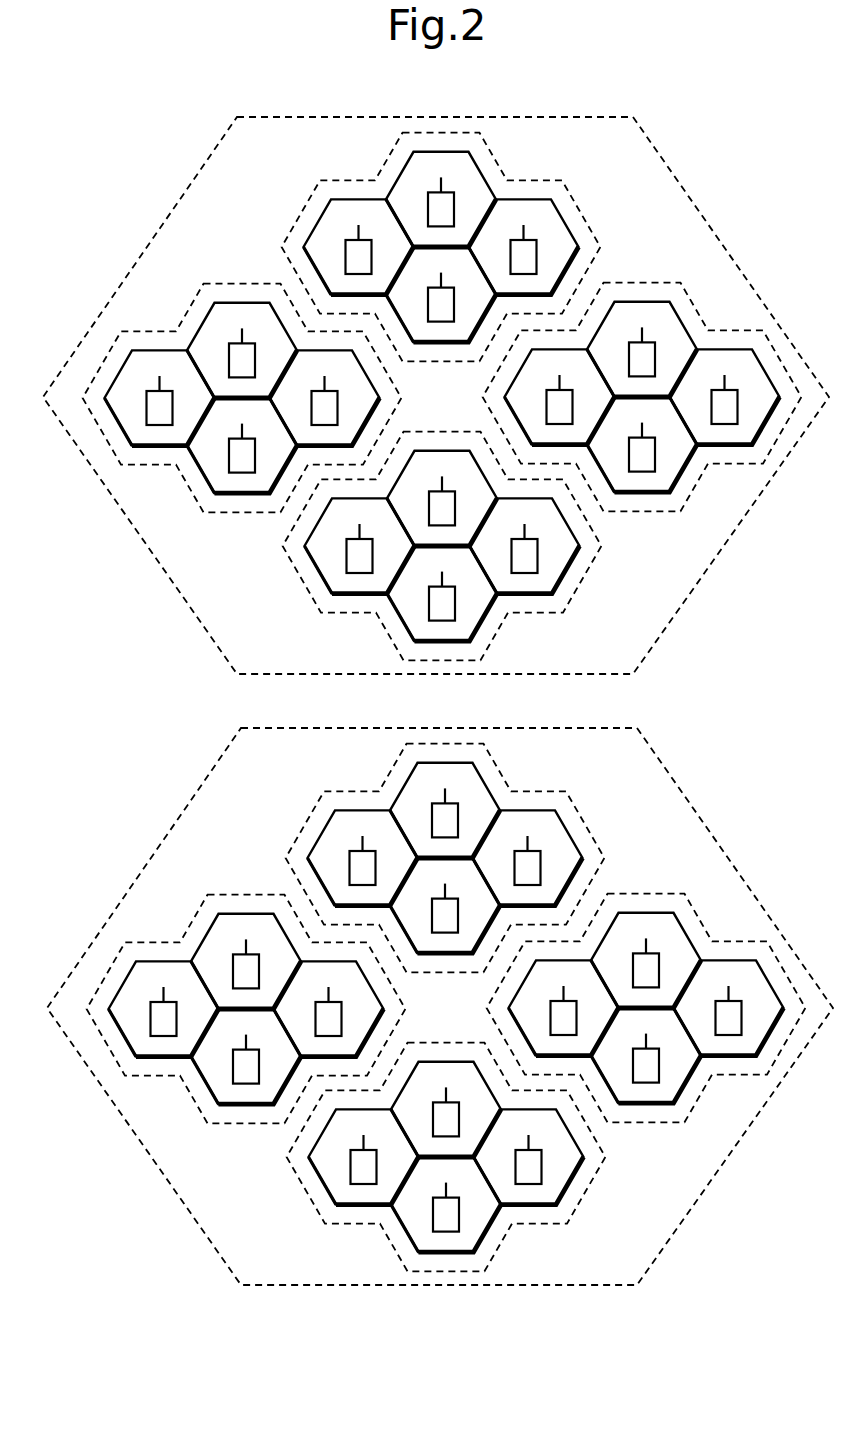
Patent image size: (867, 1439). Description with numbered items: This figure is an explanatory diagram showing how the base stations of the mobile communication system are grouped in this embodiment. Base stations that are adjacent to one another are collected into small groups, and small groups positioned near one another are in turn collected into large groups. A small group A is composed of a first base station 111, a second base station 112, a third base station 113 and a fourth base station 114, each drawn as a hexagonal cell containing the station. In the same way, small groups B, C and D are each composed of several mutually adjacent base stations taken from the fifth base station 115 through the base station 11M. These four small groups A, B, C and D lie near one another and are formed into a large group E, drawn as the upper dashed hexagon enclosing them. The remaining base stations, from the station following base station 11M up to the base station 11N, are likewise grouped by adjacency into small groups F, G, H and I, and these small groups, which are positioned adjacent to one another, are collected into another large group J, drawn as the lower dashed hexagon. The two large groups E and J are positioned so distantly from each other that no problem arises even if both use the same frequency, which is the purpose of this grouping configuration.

The first base station 111 is at (481, 173).
The base station 112 is at (346, 200).
The base station 113 is at (440, 343).
The fourth base station 114 is at (553, 203).
The base station 115 is at (683, 318).
The base station 11M is at (567, 575).
The base station 11N is at (492, 1222).
The small group A is at (598, 234).
The small group B is at (642, 512).
The small group C is at (255, 283).
The small group D is at (302, 589).
The large group E is at (695, 586).
The small group F is at (600, 843).
The small group G is at (648, 1123).
The small group H is at (257, 895).
The small group I is at (306, 1198).
The large group J is at (672, 777).